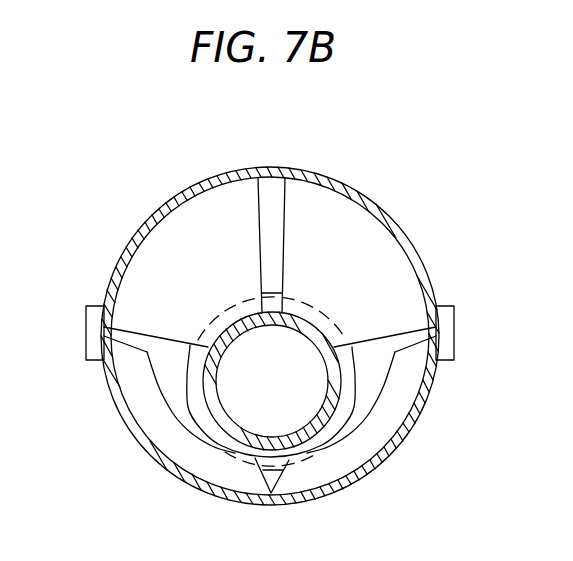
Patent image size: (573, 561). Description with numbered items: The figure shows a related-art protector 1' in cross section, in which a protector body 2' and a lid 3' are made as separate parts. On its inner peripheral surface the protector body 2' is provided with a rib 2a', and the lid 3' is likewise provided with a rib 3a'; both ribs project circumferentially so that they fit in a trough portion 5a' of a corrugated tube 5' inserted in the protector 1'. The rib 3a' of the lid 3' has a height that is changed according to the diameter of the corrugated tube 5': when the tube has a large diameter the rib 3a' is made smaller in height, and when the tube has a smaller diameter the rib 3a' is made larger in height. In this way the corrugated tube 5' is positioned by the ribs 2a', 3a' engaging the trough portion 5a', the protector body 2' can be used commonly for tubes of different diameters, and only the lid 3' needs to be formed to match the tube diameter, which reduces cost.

The protector 1' is at (247, 307).
The protector body 2' is at (270, 419).
The rib 2a' is at (146, 408).
The lid 3' is at (272, 251).
The rib 3a' is at (270, 228).
The corrugated tube 5' is at (333, 395).
The trough portion 5a' is at (336, 390).